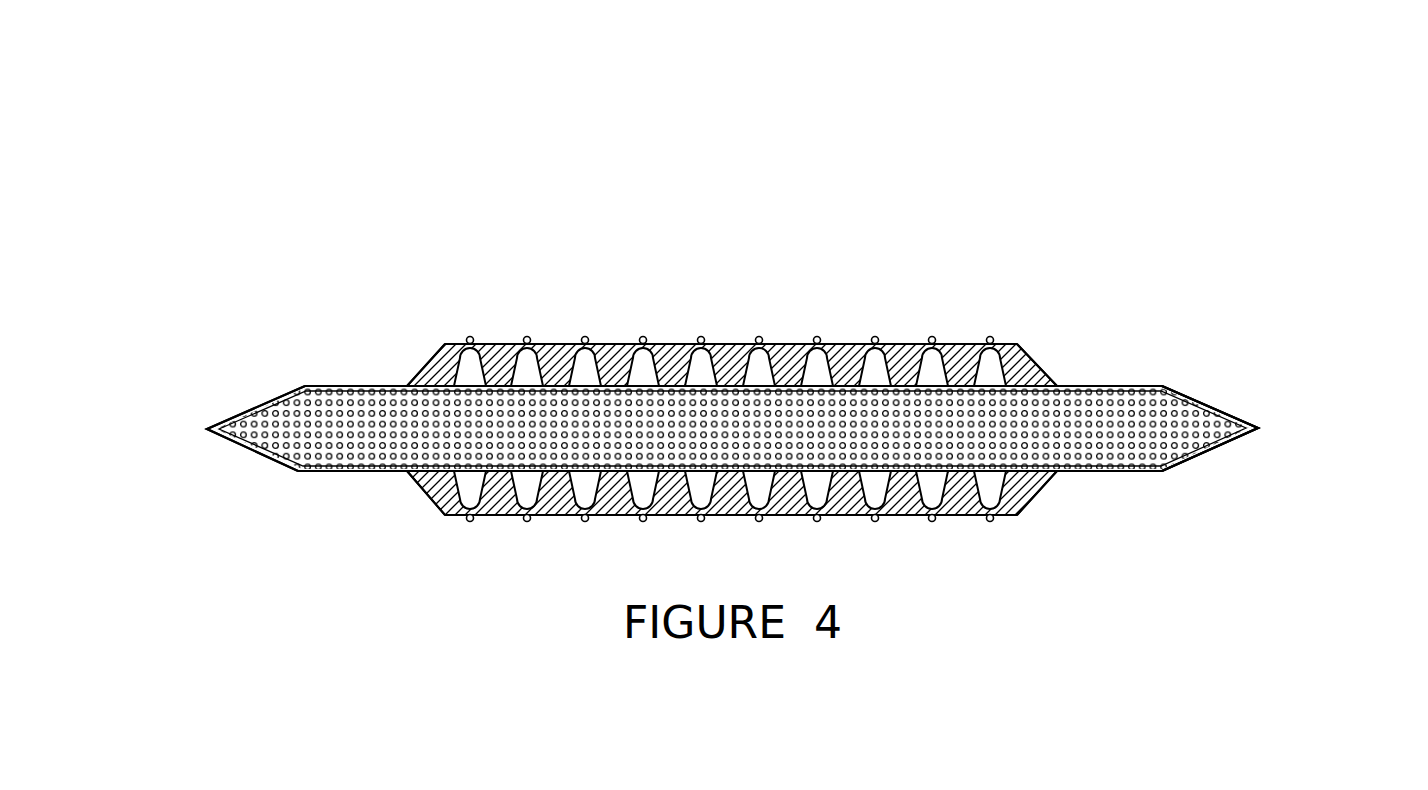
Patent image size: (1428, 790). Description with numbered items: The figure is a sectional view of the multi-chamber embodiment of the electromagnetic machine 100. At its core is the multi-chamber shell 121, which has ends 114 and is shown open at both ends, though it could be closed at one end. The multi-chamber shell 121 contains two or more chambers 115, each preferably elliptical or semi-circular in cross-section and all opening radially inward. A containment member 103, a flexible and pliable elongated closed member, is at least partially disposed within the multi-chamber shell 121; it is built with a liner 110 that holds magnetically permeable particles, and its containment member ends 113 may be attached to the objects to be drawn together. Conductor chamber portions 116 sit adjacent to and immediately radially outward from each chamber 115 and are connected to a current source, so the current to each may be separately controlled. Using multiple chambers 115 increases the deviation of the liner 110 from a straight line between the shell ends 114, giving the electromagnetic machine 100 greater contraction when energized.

The electromagnetic machine 100 is at (838, 128).
The containment member 103 is at (307, 385).
The liner 110 is at (1200, 400).
The containment member ends 113 is at (207, 430).
The ends 114 is at (408, 384).
The chambers 115 is at (552, 343).
The conductor chamber portions 116 is at (585, 522).
The multi-chamber shell 121 is at (840, 343).